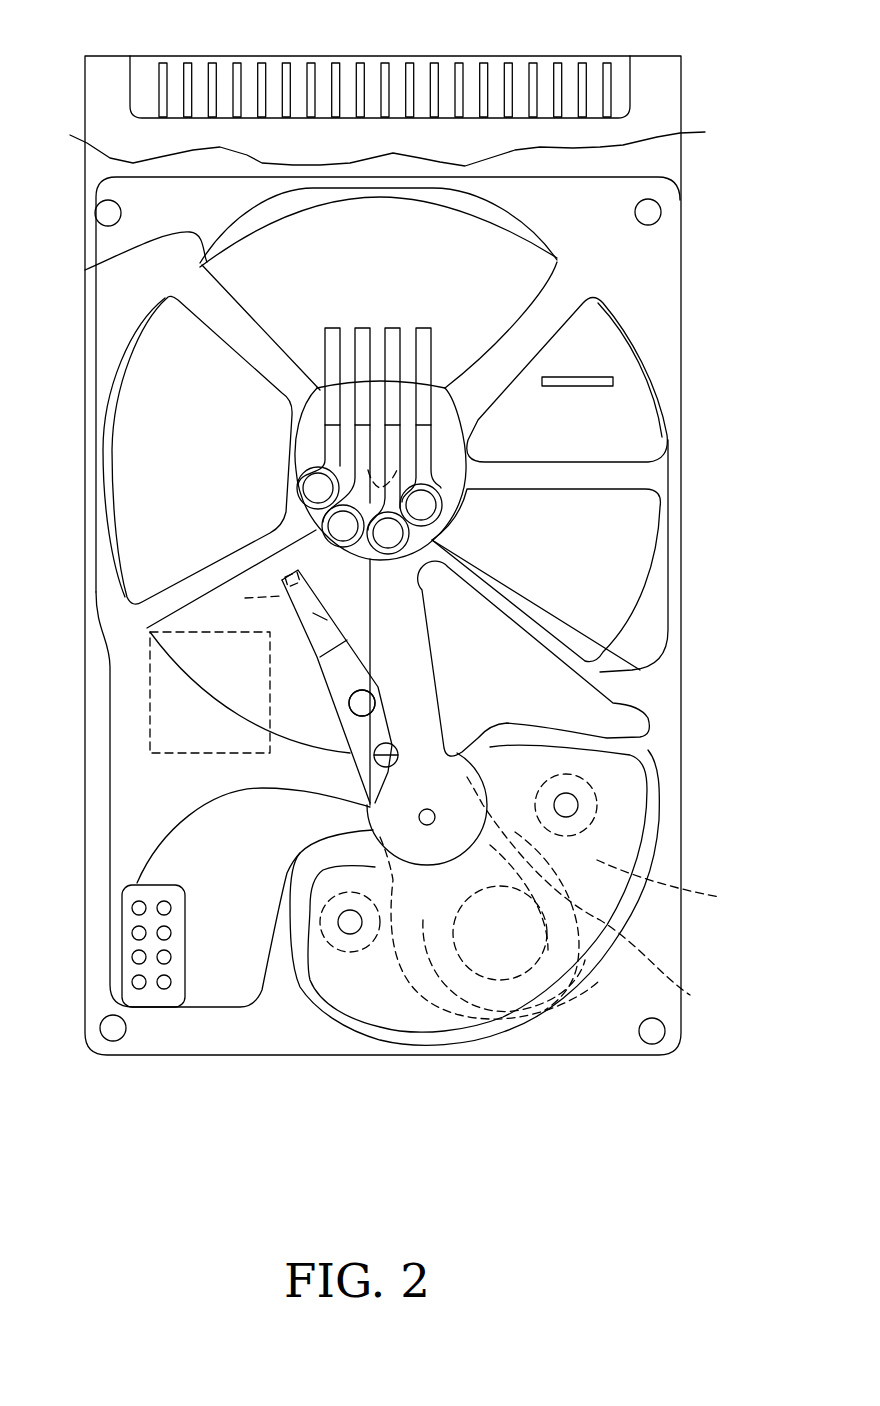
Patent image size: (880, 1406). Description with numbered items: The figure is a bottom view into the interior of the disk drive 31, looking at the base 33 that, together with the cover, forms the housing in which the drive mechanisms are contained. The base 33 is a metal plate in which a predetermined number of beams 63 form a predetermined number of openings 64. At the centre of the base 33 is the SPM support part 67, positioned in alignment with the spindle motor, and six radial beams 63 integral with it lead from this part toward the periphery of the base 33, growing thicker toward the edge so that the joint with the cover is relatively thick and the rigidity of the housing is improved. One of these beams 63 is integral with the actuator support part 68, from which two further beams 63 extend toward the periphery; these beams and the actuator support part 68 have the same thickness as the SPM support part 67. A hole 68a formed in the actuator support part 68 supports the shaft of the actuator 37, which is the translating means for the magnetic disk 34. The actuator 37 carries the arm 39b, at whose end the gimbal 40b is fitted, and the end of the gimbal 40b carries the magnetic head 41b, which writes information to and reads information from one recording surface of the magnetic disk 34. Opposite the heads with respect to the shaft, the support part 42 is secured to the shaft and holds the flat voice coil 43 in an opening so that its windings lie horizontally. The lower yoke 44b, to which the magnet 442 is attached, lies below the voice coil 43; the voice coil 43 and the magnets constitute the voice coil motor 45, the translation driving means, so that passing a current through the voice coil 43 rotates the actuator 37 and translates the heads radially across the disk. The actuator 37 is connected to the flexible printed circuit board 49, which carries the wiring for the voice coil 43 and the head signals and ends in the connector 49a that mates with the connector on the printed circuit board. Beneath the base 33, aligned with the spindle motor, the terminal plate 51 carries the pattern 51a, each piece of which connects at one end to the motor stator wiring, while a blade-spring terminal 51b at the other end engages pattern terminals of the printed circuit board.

The disk drive 31 is at (62, 36).
The base 33 is at (662, 267).
The magnetic disk 34 is at (632, 397).
The actuator 37 is at (340, 768).
The arm 39b is at (347, 703).
The gimbal 40b is at (272, 640).
The magnetic head 41b is at (247, 600).
The support part 42 is at (470, 1012).
The voice coil 43 is at (527, 980).
The lower yoke 44b is at (630, 800).
The magnet 442 is at (600, 922).
The voice coil motor 45 is at (336, 1020).
The flexible printed circuit board 49 is at (140, 857).
The connector 49a is at (177, 920).
The terminal plate 51 is at (450, 500).
The pattern 51a is at (445, 458).
The terminal 51b is at (446, 348).
The beams 63 is at (230, 323).
The openings 64 is at (85, 269).
The SPM support part 67 is at (292, 437).
The actuator support part 68 is at (420, 853).
The hole 68a is at (426, 808).